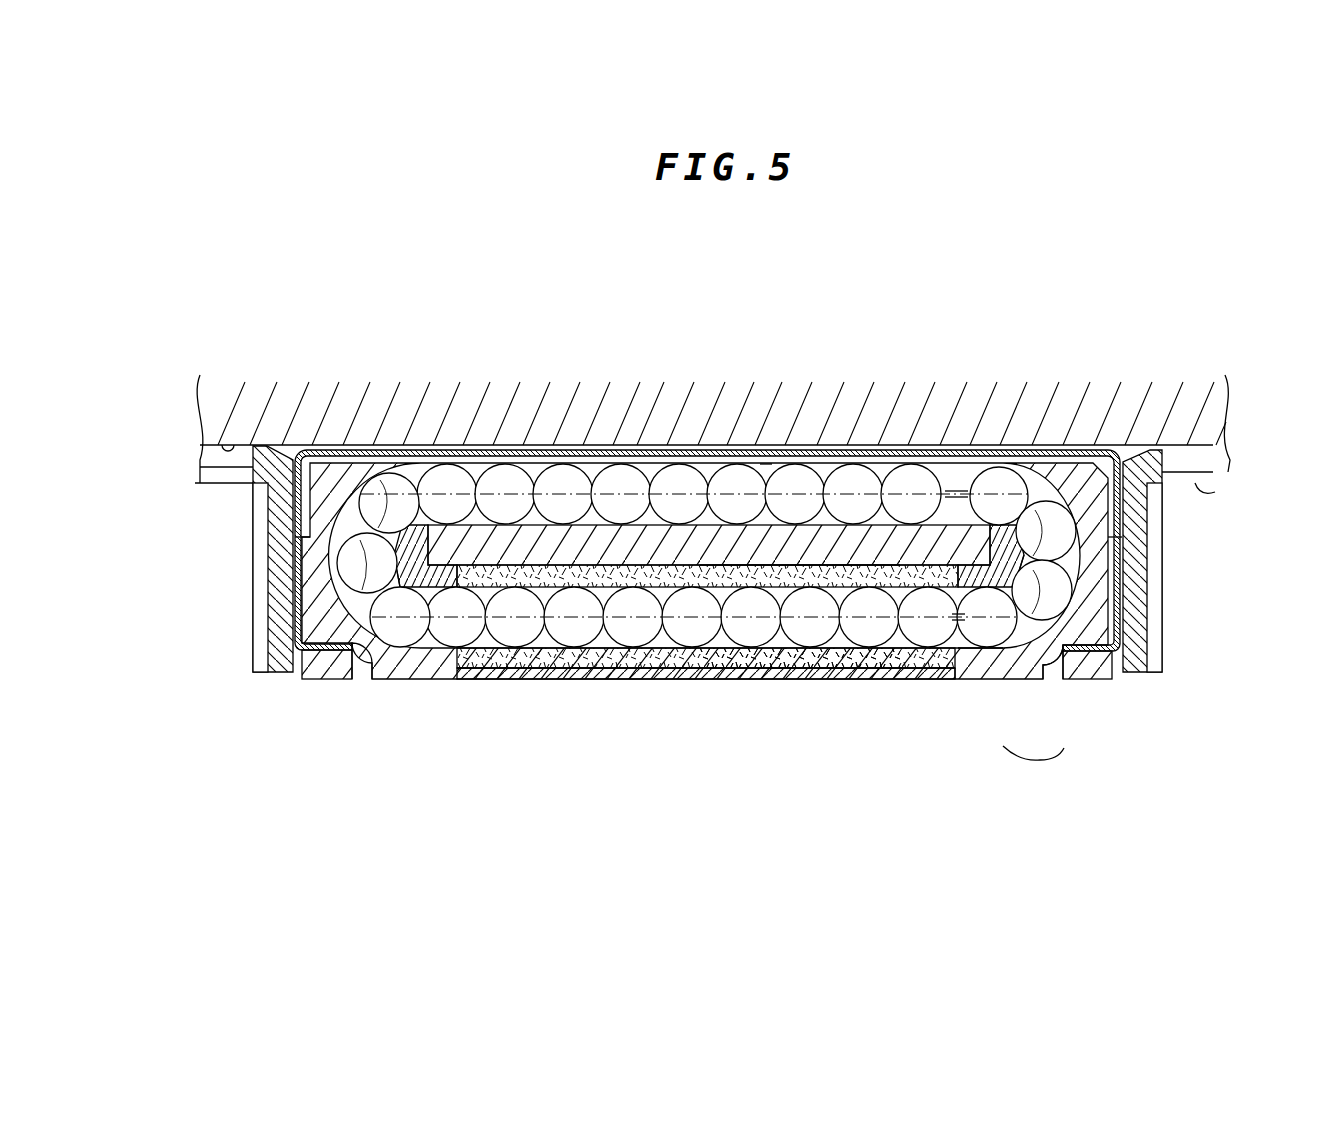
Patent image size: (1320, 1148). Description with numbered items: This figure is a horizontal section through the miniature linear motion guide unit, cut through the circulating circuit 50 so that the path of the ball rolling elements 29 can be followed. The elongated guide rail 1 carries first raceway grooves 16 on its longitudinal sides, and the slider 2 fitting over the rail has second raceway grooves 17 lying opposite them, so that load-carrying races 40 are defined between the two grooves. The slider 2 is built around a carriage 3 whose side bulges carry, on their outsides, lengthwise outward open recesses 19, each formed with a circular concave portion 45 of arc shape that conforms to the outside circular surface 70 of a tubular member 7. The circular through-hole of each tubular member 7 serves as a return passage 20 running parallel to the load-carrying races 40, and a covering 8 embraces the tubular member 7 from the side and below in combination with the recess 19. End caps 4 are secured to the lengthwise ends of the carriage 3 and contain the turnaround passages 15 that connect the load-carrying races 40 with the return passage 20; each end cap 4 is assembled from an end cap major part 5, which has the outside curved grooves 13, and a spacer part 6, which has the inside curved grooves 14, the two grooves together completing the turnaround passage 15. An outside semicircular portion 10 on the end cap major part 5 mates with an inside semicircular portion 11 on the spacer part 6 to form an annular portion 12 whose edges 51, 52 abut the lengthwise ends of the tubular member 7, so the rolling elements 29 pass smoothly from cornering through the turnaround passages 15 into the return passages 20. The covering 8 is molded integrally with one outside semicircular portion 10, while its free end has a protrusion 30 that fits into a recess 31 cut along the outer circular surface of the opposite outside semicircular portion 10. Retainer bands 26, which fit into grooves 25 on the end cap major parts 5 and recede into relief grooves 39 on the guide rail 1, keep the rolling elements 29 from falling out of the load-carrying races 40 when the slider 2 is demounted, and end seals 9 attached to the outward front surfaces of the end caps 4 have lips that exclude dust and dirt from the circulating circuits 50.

The guide rail 1 is at (872, 445).
The slider 2 is at (688, 678).
The carriage 3 is at (722, 543).
The end cap 4 is at (1033, 767).
The end cap major part 5 is at (315, 670).
The spacer part 6 is at (398, 545).
The tubular member 7 is at (803, 672).
The covering 8 is at (743, 673).
The end seal 9 is at (280, 573).
The outside semicircular portion 10 is at (452, 658).
The inside semicircular portion 11 is at (448, 560).
The annular portion 12 is at (935, 745).
The outside curved groove 13 is at (347, 452).
The inside curved groove 14 is at (388, 463).
The turnaround passage 15 is at (362, 603).
The raceway groove 16 is at (533, 452).
The raceway groove 17 is at (760, 470).
The outward open recess 19 is at (790, 565).
The return passage 20 is at (600, 645).
The groove 25 is at (293, 593).
The retainer band 26 is at (292, 550).
The ball rolling element 29 is at (565, 478).
The protrusion 30 is at (1005, 660).
The recess 31 is at (955, 676).
The relief groove 39 is at (241, 445).
The load-carrying race 40 is at (650, 473).
The circular concave portion 45 is at (780, 660).
The circulating circuit 50 is at (888, 473).
The edge of outside semicircular portion 51 is at (475, 660).
The edge of inside semicircular portion 52 is at (480, 565).
The outside circular surface 70 is at (832, 660).